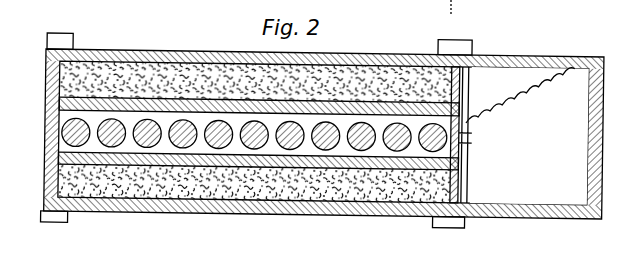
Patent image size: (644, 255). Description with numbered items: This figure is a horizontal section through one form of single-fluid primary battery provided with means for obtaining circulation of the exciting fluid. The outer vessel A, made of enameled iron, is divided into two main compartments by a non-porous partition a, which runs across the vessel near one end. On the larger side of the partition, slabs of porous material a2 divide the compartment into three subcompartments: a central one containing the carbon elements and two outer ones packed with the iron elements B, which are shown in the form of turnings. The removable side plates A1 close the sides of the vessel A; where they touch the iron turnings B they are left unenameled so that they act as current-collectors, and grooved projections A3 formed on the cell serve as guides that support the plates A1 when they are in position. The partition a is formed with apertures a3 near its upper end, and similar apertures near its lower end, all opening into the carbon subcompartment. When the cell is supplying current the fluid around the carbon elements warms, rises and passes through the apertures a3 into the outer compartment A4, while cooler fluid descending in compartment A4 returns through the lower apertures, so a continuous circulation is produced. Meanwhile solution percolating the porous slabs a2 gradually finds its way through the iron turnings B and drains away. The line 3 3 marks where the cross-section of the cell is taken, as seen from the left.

The outer vessel A is at (47, 186).
The removable side plates A1 is at (177, 53).
The grooved projections A3 is at (67, 36).
The outer compartment A4 is at (529, 136).
The iron elements B is at (316, 68).
The non-porous partition a is at (520, 95).
The porous slabs a2 is at (184, 135).
The apertures a3 is at (470, 137).
The section line 3 3 is at (451, 15).